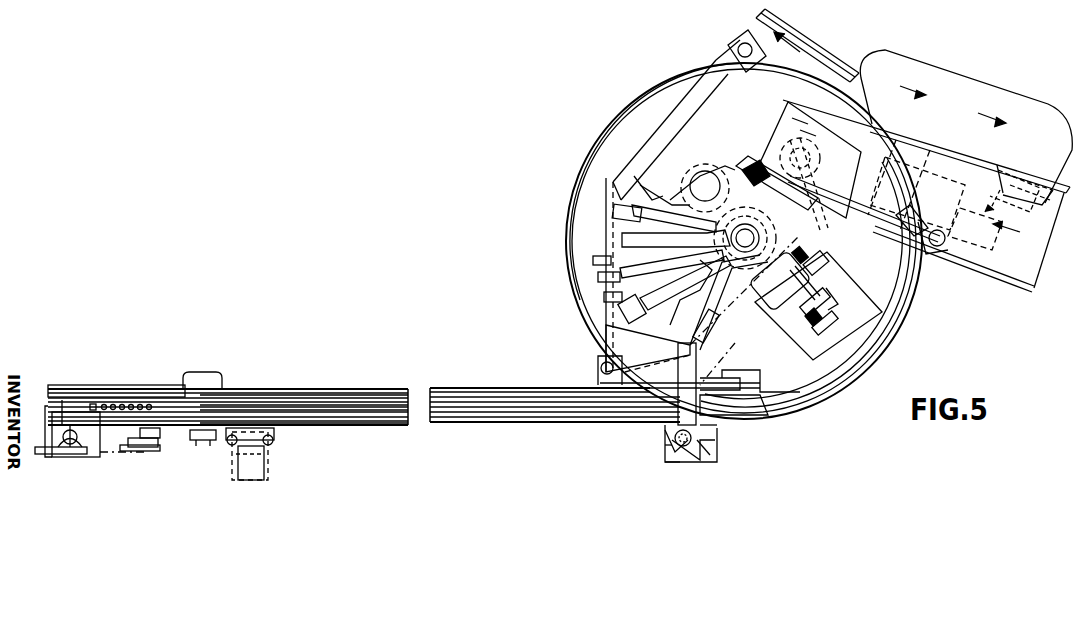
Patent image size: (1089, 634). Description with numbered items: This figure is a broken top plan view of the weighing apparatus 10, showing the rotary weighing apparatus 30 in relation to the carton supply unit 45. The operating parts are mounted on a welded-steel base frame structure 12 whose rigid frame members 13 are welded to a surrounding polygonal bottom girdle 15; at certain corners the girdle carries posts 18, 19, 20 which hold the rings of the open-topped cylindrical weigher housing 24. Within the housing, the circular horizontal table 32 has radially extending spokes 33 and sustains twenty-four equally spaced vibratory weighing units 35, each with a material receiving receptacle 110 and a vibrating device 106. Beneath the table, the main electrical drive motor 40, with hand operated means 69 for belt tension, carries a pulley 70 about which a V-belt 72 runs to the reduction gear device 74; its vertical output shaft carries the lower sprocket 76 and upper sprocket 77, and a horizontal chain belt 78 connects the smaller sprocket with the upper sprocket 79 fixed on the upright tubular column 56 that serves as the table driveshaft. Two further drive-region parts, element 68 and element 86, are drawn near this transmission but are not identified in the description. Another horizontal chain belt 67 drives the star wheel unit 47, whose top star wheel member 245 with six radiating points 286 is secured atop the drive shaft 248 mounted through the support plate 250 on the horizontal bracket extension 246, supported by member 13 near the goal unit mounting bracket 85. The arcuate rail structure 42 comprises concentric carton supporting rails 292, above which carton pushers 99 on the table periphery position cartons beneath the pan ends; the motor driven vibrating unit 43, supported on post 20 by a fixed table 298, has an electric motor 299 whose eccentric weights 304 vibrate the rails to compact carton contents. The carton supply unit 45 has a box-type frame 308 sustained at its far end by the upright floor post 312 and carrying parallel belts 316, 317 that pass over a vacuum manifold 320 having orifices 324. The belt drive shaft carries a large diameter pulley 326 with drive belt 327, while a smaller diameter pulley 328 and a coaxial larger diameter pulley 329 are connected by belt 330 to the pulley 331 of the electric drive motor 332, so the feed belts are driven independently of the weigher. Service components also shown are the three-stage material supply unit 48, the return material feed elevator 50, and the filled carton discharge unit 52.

The weighing apparatus 10 is at (568, 150).
The base frame structure 12 is at (606, 178).
The rigid frame members 13 is at (628, 347).
The polygonal welded bottom girdle 15 is at (702, 84).
The post 18 is at (600, 368).
The post 19 is at (740, 46).
The post 20 is at (960, 244).
The weigher housing 24 is at (664, 84).
The rotary weighing apparatus 30 is at (580, 243).
The horizontal table 32 is at (650, 112).
The spokes 33 is at (638, 182).
The vibratory weighing units 35 is at (620, 278).
The main electrical drive motor 40 is at (819, 314).
The arcuate carton supporting and guiding rail structure 42 is at (862, 347).
The motor driven vibrating unit 43 is at (998, 170).
The carton supply unit 45 is at (448, 390).
The star wheel unit 47 is at (700, 466).
The three-stage material supply unit 48 is at (962, 290).
The return material feed elevator 50 is at (987, 93).
The filled carton discharge unit 52 is at (792, 28).
The upright tubular column 56 is at (784, 280).
The horizontal chain belt 67 is at (735, 343).
The drive 68 is at (812, 163).
The hand operated means 69 is at (830, 294).
The pulley 70 is at (818, 268).
The V-belt 72 is at (860, 221).
The reduction gear device 74 is at (705, 182).
The lower sprocket 76 is at (668, 192).
The upper sprocket 77 is at (690, 166).
The horizontal chain belt 78 is at (741, 164).
The upper sprocket 79 is at (694, 292).
The goal unit mounting bracket 85 is at (712, 318).
The rod 86 is at (813, 218).
The carton pushers 99 is at (770, 404).
The vibrating device 106 is at (618, 213).
The material receiving receptacle 110 is at (598, 262).
The top star wheel member 245 is at (662, 428).
The horizontal bracket extension 246 is at (685, 365).
The upright drive shaft 248 is at (672, 468).
The horizontal rectangular support plate 250 is at (668, 450).
The radiating points 286 is at (722, 445).
The carton supporting rails 292 is at (830, 384).
The fixed table 298 is at (940, 248).
The electric motor 299 is at (1022, 185).
The eccentric weights 304 is at (916, 185).
The box-type frame 308 is at (303, 428).
The upright floor post 312 is at (72, 446).
The belt 316 is at (334, 398).
The belt 317 is at (352, 412).
The vacuum manifold 320 is at (383, 406).
The orifices 324 is at (125, 395).
The large diameter pulley 326 is at (55, 453).
The drive belt 327 is at (104, 452).
The smaller diameter pulley 328 is at (150, 450).
The larger diameter pulley 329 is at (140, 400).
The belt 330 is at (133, 450).
The pulley 331 is at (205, 445).
The electric drive motor 332 is at (222, 380).